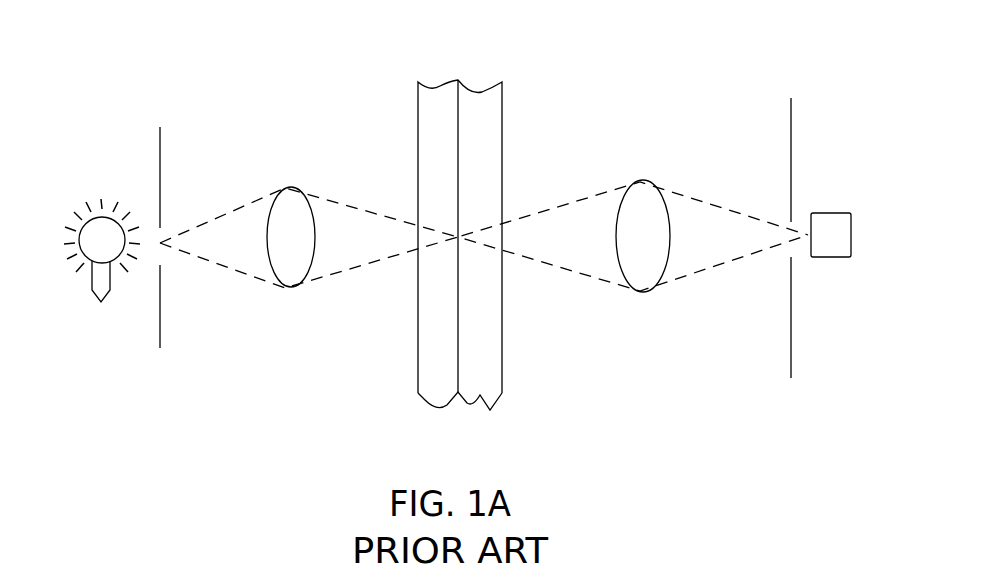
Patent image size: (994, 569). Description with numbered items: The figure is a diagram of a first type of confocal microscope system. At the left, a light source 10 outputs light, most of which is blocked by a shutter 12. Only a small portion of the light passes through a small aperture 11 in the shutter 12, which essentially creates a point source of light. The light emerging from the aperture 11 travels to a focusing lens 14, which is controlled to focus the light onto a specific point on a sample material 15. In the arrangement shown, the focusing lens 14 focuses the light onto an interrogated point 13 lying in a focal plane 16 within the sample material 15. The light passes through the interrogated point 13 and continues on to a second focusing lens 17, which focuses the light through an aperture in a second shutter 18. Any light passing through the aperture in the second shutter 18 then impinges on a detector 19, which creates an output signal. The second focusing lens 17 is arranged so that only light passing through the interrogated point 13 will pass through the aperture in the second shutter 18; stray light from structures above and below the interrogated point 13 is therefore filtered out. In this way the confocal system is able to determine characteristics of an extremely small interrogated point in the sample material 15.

The light source 10 is at (102, 232).
The aperture 11 is at (160, 247).
The shutter 12 is at (158, 150).
The interrogated point 13 is at (458, 237).
The focusing lens 14 is at (288, 218).
The sample material 15 is at (437, 85).
The focal plane 16 is at (460, 130).
The second focusing lens 17 is at (642, 215).
The second shutter 18 is at (790, 135).
The detector 19 is at (828, 213).